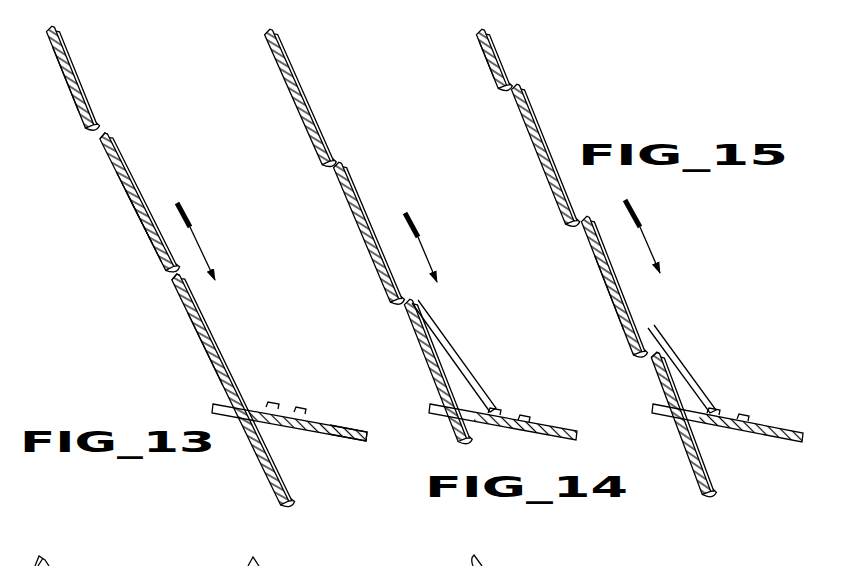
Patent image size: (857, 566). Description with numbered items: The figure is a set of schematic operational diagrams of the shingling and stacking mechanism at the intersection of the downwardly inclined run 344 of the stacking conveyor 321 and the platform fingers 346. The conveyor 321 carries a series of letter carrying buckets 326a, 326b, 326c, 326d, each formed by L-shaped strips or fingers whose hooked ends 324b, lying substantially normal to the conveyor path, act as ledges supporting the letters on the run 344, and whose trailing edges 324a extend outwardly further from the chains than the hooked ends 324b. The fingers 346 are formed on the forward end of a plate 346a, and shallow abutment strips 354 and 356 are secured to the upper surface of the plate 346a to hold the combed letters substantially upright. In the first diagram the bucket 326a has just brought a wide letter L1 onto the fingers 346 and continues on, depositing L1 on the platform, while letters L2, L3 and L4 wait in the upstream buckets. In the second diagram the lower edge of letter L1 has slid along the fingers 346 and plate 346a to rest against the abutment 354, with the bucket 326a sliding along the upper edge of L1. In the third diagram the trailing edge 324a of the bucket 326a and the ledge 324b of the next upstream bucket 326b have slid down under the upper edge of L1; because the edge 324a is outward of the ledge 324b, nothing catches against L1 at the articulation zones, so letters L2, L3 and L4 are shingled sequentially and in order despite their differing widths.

In FIG. 13, the wide letter L1 is at (218, 356).
In FIG. 14, the wide letter L1 is at (455, 364).
In FIG. 15, the wide letter L1 is at (682, 367).
In FIG. 13, the letter L2 is at (138, 186).
In FIG. 14, the letter L2 is at (358, 193).
In FIG. 15, the letter L2 is at (632, 307).
In FIG. 13, the letter L3 is at (65, 52).
In FIG. 14, the letter L3 is at (303, 89).
In FIG. 15, the letter L3 is at (540, 117).
In FIG. 15, the letter L4 is at (498, 54).
In FIG. 13, the stacking conveyor 321 is at (113, 327).
In FIG. 13, the trailing edge 324a is at (108, 136).
In FIG. 15, the trailing edge 324a is at (657, 357).
In FIG. 13, the hooked end 324b is at (93, 121).
In FIG. 15, the hooked end 324b is at (642, 338).
In FIG. 13, the bucket 326a is at (192, 352).
In FIG. 14, the bucket 326a is at (425, 363).
In FIG. 15, the bucket 326a is at (713, 460).
In FIG. 13, the next upstream bucket 326b is at (137, 240).
In FIG. 15, the next upstream bucket 326b is at (608, 300).
In FIG. 13, the bucket 326c is at (70, 113).
In FIG. 15, the bucket 326d is at (478, 63).
In FIG. 13, the downwardly inclined run 344 is at (110, 185).
In FIG. 13, the fingers 346 is at (215, 407).
In FIG. 14, the fingers 346 is at (503, 422).
In FIG. 15, the fingers 346 is at (727, 423).
In FIG. 13, the plate 346a is at (316, 433).
In FIG. 13, the abutment strip 354 is at (276, 410).
In FIG. 14, the abutment strip 354 is at (497, 410).
In FIG. 13, the abutment strip 356 is at (303, 415).